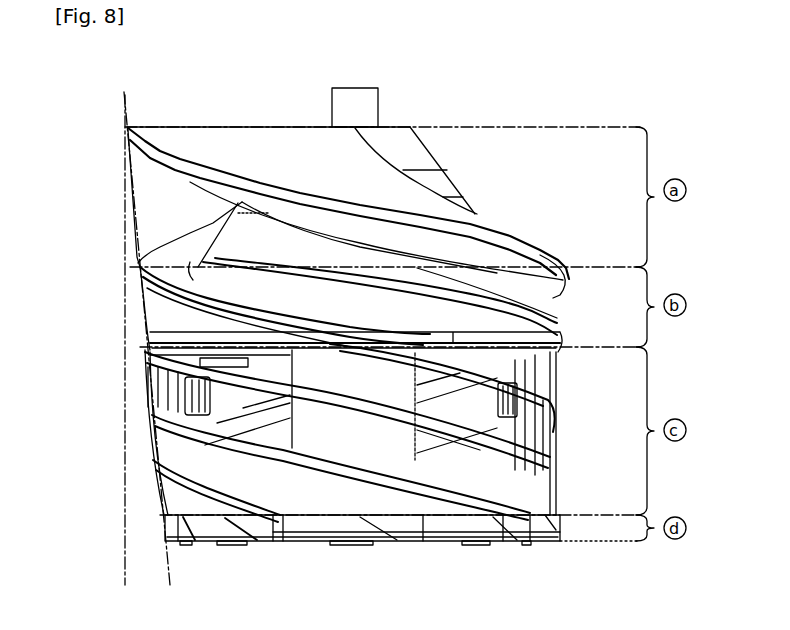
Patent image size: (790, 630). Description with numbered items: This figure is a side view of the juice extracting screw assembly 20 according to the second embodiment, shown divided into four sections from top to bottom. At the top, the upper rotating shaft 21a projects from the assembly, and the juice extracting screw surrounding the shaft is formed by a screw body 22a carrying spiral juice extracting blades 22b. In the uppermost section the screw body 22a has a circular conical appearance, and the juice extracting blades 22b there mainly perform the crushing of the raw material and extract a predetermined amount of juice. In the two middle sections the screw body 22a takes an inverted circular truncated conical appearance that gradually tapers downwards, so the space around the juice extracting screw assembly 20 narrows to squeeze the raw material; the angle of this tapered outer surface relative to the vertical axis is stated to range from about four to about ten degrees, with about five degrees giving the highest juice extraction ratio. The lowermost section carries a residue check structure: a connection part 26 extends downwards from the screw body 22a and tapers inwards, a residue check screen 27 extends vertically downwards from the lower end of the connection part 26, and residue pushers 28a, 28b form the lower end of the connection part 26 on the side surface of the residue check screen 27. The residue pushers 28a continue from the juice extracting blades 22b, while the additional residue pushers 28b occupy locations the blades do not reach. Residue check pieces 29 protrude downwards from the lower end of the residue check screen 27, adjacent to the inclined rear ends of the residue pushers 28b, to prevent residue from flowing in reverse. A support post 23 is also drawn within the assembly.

The juice extracting screw assembly 20 is at (156, 61).
The upper rotating shaft 21a is at (358, 104).
The screw body 22a is at (233, 282).
The juice extracting blade 22b is at (417, 200).
The support post 23 is at (477, 403).
The connection part 26 is at (307, 528).
The residue check screen 27 is at (349, 535).
The residue pusher 28a is at (520, 530).
The residue pusher 28b is at (407, 530).
The residue check piece 29 is at (475, 545).